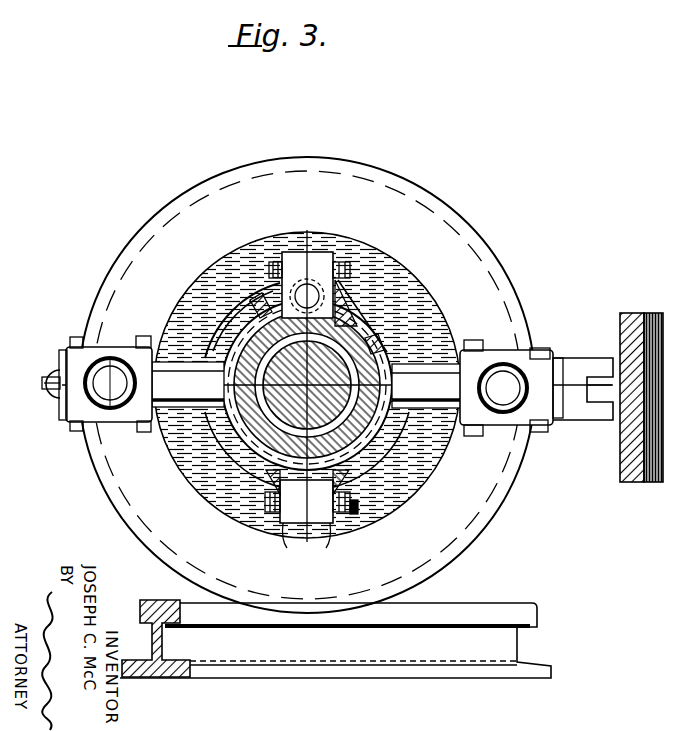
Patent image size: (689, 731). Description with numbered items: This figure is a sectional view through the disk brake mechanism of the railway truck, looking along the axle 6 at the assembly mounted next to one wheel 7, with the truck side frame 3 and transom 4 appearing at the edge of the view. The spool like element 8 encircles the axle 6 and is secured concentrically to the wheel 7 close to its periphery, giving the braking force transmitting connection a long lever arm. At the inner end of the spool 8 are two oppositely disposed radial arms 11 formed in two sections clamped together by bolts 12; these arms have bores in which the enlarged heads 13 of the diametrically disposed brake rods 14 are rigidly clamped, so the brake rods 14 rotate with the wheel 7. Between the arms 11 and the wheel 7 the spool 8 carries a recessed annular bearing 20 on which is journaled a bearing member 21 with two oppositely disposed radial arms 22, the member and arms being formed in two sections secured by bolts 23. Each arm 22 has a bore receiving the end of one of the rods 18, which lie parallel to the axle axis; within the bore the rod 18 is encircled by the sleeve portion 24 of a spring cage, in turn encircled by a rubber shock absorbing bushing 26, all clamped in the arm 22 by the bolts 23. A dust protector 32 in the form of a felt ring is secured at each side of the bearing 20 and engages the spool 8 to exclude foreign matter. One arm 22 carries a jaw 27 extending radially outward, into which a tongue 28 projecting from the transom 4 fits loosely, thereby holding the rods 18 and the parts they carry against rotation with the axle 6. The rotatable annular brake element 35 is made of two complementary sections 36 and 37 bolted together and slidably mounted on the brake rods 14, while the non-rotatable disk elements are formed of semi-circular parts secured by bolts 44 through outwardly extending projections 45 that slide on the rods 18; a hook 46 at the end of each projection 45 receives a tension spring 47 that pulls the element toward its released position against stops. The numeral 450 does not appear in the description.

The side frame 3 is at (335, 639).
The transom 4 is at (628, 482).
The axle 6 is at (252, 428).
The wheel 7 is at (480, 550).
The spool like element 8 is at (276, 410).
The radial arm 11 is at (322, 252).
The bolt 12 is at (345, 268).
The enlarged head 13 is at (345, 300).
The brake rod 14 is at (352, 290).
The rod 18 is at (110, 350).
The annular bearing 20 is at (322, 294).
The bearing member 21 is at (388, 358).
The radial arm 22 is at (183, 376).
The bolt 23 is at (143, 337).
The sleeve portion 24 is at (92, 396).
The shock absorbing bushing 26 is at (114, 408).
The jaw 27 is at (600, 358).
The tongue 28 is at (591, 402).
The dust protector 32 is at (374, 350).
The rotatable brake element 35 is at (403, 495).
The complementary section 36 is at (384, 522).
The complementary section 37 is at (212, 490).
The bolt 44 is at (78, 348).
The outwardly extending projection 45 is at (62, 360).
The hook 46 is at (48, 374).
The spring 47 is at (48, 392).
The wall support 450 is at (676, 387).